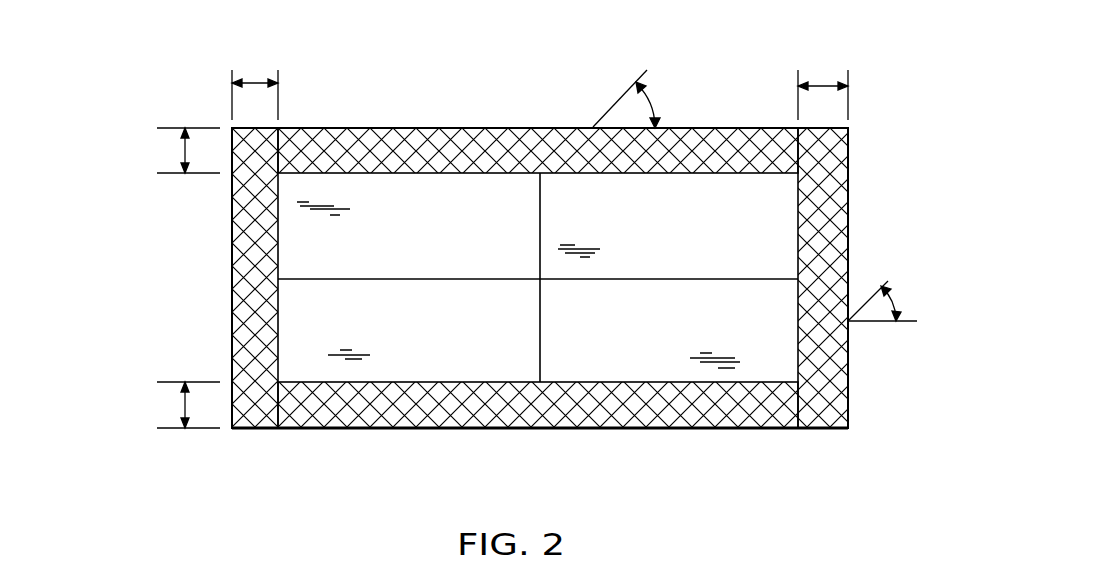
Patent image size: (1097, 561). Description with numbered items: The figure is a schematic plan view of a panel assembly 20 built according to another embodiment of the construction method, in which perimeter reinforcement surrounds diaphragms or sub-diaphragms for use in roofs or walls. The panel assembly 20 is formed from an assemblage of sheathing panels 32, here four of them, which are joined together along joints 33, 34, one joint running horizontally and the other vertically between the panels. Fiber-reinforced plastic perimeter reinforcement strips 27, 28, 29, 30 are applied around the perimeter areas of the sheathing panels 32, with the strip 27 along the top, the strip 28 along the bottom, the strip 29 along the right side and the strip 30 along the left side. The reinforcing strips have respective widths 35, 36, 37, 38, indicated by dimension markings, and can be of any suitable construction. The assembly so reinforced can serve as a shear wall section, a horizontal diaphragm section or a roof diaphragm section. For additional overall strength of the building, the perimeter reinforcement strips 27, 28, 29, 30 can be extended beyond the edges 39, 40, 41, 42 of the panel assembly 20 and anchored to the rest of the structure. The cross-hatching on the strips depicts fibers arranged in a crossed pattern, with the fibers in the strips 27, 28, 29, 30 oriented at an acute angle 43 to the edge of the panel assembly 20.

The panel assembly 20 is at (460, 115).
The FRP perimeter reinforcement strip 27 is at (505, 120).
The FRP perimeter reinforcement strip 28 is at (624, 438).
The FRP perimeter reinforcement strip 29 is at (854, 249).
The FRP perimeter reinforcement strip 30 is at (226, 219).
The sheathing panel 32 is at (443, 236).
The joint 33 is at (718, 279).
The joint 34 is at (540, 213).
The width 35 is at (180, 150).
The width 36 is at (170, 404).
The width 37 is at (823, 78).
The width 38 is at (256, 78).
The edge 39 is at (318, 128).
The edge 40 is at (421, 430).
The edge 41 is at (849, 407).
The edge 42 is at (232, 292).
The acute angle 43 is at (766, 196).